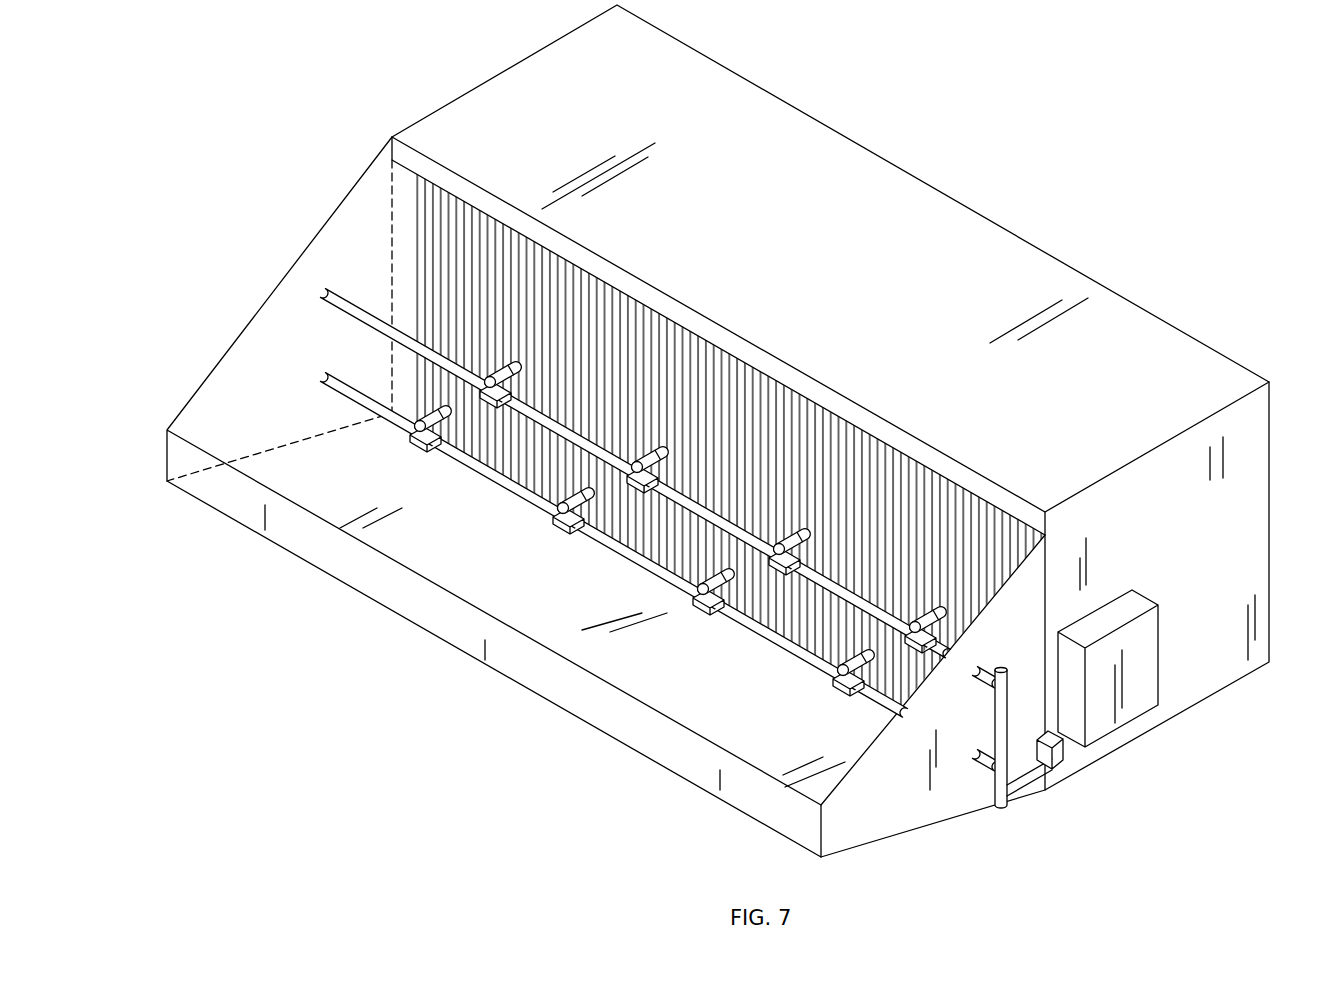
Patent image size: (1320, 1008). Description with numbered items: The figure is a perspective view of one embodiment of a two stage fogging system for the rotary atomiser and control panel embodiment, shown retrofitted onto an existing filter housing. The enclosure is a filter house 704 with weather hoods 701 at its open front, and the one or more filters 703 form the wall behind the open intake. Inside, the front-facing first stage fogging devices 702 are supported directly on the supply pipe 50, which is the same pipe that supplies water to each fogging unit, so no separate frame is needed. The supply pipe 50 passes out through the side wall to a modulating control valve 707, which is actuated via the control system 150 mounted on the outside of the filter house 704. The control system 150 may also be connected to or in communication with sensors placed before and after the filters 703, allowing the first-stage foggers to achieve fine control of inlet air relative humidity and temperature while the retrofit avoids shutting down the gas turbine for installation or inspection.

The filter house 704 is at (1116, 280).
The weather hoods 701 is at (265, 528).
The filters 703 is at (460, 257).
The first stage fogging devices 702 is at (700, 600).
The supply pipe 50 is at (879, 697).
The modulating control valve 707 is at (1070, 755).
The control system 150 is at (1147, 682).